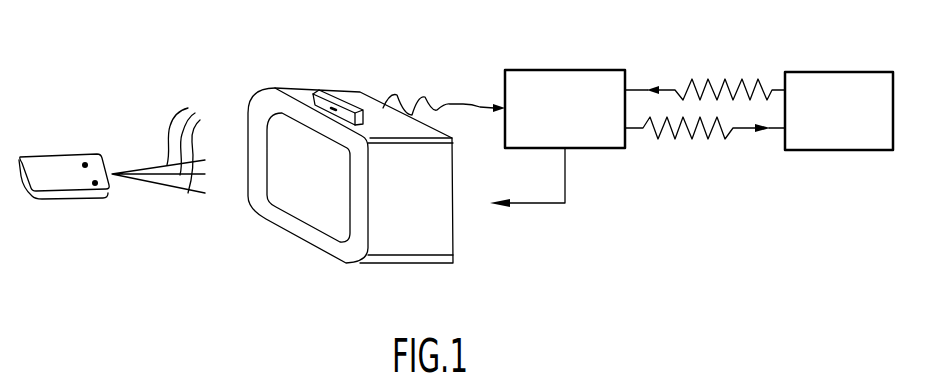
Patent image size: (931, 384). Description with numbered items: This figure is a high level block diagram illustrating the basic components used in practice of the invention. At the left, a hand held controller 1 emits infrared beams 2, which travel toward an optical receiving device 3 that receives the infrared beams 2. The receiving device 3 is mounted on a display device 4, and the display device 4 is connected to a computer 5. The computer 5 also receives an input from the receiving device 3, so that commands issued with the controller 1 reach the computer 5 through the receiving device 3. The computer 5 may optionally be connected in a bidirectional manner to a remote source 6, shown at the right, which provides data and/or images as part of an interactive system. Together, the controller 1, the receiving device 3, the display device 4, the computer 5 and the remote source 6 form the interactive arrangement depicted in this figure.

The hand held controller 1 is at (78, 158).
The infrared beams 2 is at (159, 143).
The optical receiving device 3 is at (330, 92).
The display device 4 is at (432, 263).
The computer 5 is at (533, 70).
The remote source 6 is at (817, 72).